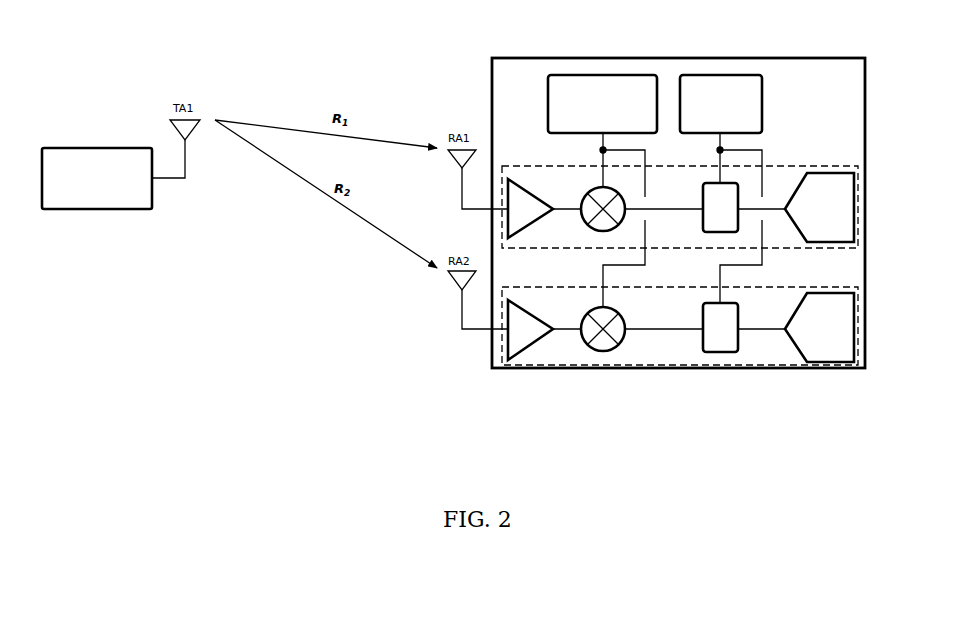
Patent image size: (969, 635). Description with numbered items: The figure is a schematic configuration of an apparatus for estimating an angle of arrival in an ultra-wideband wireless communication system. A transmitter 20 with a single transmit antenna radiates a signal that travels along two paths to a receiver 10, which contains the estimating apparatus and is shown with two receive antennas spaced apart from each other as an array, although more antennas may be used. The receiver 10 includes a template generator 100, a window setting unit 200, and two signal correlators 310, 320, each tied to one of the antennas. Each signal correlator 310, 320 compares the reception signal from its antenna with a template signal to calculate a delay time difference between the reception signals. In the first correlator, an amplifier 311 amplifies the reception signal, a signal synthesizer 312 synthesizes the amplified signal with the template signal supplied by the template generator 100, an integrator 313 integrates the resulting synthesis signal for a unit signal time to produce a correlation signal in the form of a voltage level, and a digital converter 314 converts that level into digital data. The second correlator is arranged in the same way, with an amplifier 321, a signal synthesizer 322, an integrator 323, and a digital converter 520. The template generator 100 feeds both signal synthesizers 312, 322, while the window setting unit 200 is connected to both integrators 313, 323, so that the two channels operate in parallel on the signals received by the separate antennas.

The transmitter 20 is at (88, 148).
The receiver 10 is at (810, 57).
The template generator 100 is at (622, 75).
The window setting unit 200 is at (728, 75).
The signal correlator 310 is at (862, 171).
The amplifier 311 is at (522, 182).
The signal synthesizer 312 is at (598, 233).
The integrator 313 is at (708, 233).
The digital converter 314 is at (830, 169).
The signal correlator 320 is at (862, 297).
The amplifier 321 is at (524, 303).
The signal synthesizer 322 is at (600, 353).
The integrator 323 is at (708, 352).
The digital converter 520 is at (830, 292).